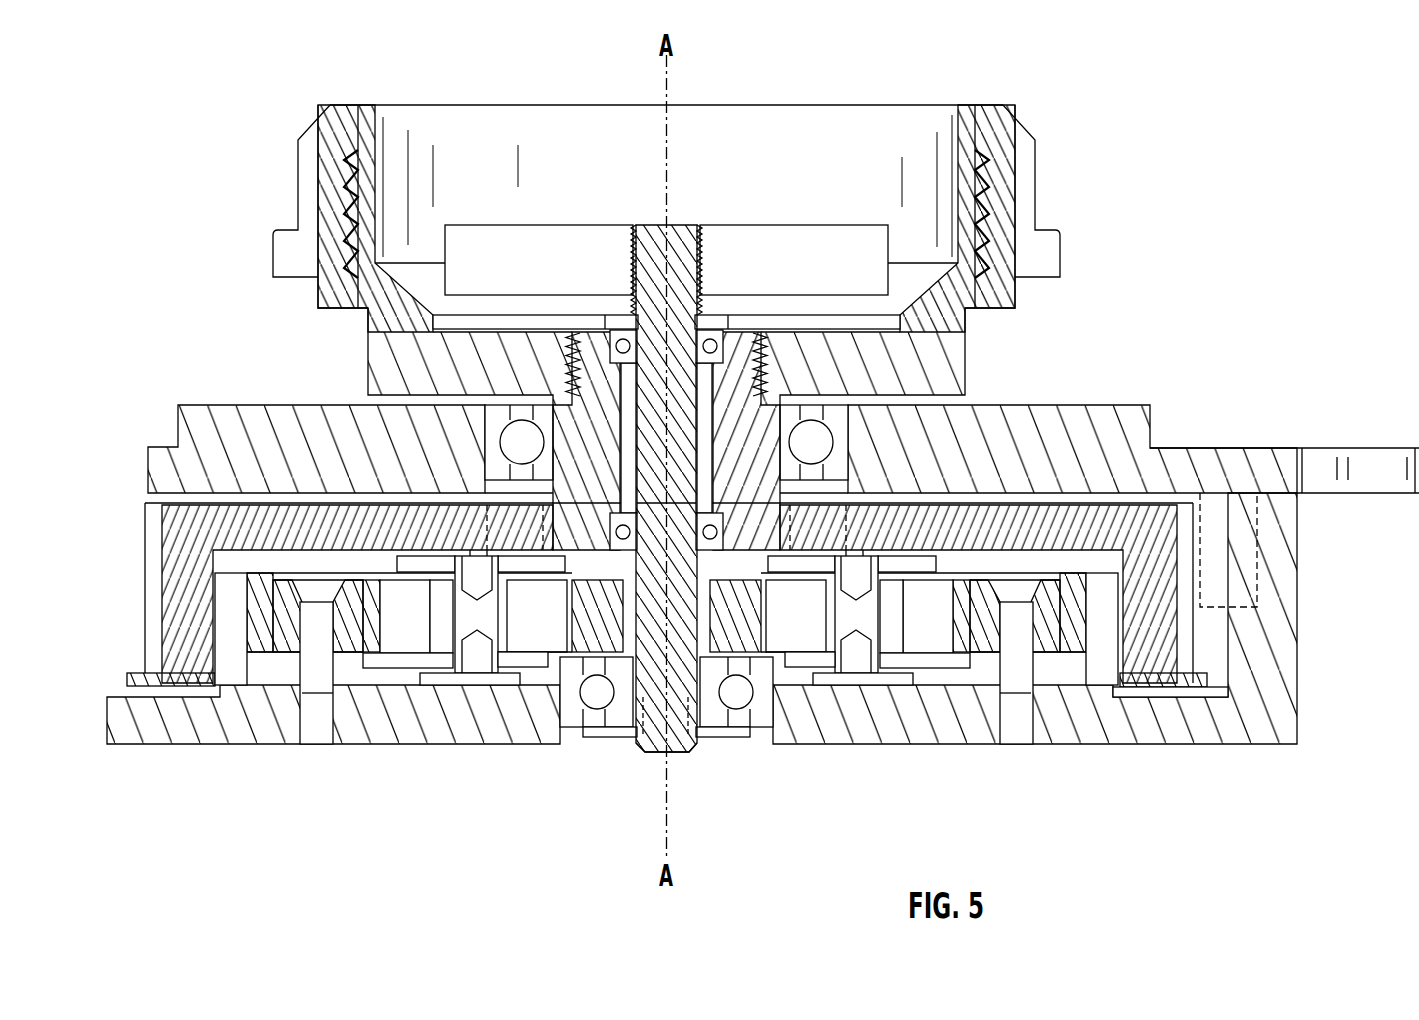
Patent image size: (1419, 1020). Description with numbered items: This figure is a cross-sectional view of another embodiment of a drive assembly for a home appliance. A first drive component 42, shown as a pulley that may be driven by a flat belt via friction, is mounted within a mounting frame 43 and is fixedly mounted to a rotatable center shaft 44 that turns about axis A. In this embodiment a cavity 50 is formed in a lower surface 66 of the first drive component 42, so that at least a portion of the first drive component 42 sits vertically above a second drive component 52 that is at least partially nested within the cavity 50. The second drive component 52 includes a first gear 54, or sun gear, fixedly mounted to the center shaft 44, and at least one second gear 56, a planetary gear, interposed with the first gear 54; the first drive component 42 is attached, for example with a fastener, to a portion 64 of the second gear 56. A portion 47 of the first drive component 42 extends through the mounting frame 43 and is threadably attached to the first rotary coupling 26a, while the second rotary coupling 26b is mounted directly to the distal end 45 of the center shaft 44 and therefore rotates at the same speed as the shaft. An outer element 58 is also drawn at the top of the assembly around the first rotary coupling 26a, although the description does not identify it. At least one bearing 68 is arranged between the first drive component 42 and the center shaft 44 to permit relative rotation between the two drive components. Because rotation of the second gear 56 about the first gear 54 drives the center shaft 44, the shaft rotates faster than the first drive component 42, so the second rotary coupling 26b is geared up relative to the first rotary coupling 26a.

The lock ring 58 is at (403, 118).
The second rotary coupling 26b is at (512, 222).
The distal end 45 is at (650, 225).
The first rotary coupling 26a is at (848, 138).
The mounting frame 43 is at (218, 420).
The portion of the second gear 64 is at (425, 570).
The portion of the first drive component 47 is at (583, 455).
The bearing 68 is at (720, 522).
The first drive component 42 is at (175, 573).
The cavity 50 is at (240, 744).
The second gear 56 is at (387, 628).
The first gear 54 is at (583, 637).
The center shaft 44 is at (643, 643).
The second drive component 52 is at (748, 645).
The lower surface 66 is at (1158, 687).